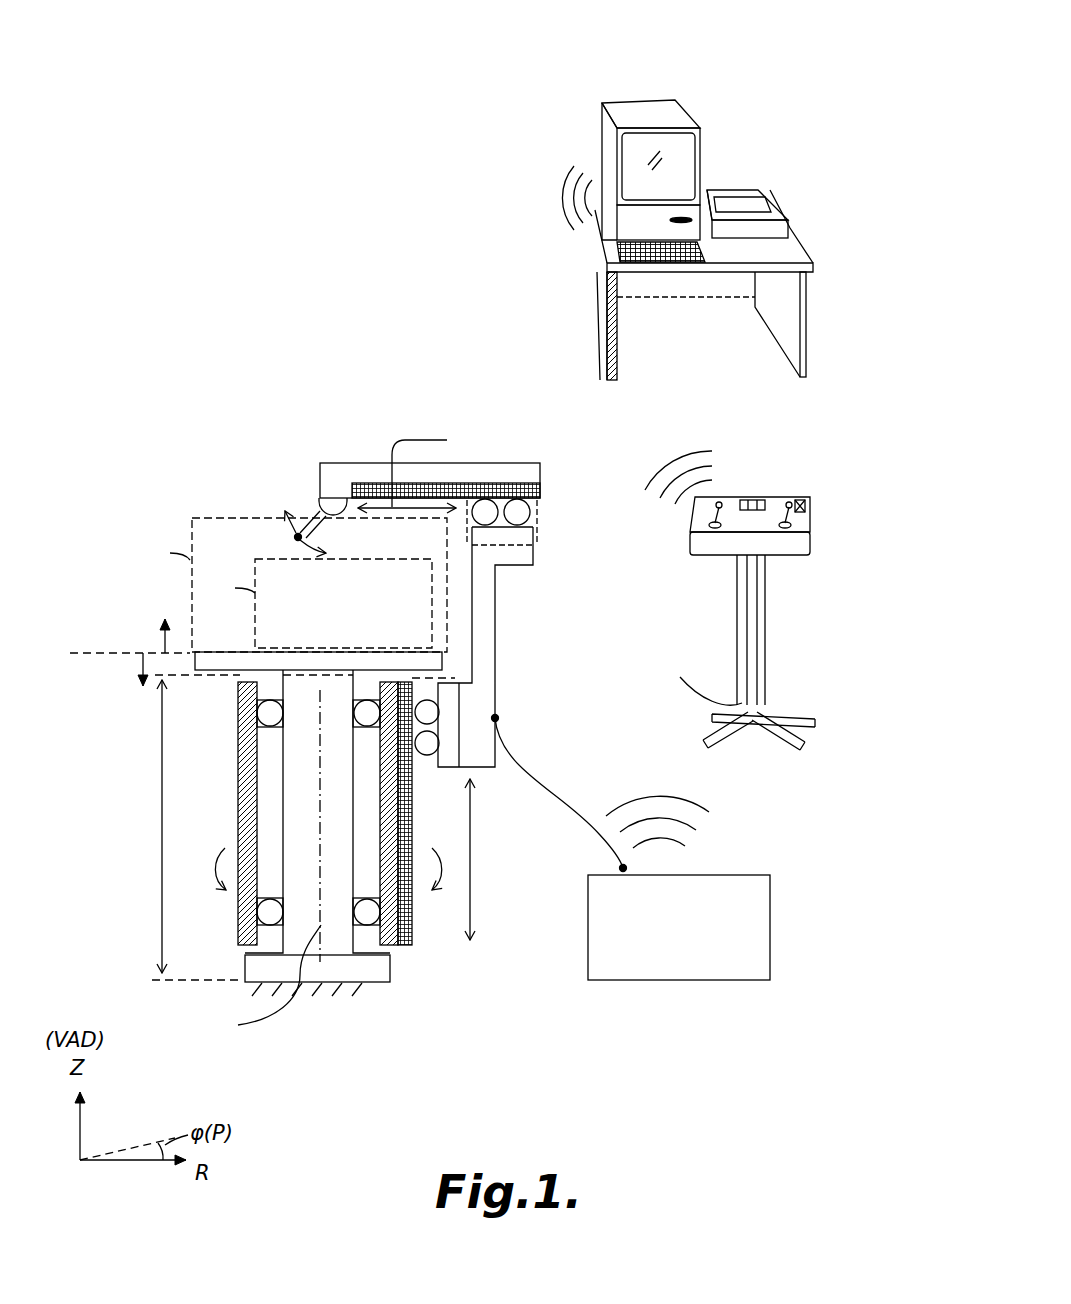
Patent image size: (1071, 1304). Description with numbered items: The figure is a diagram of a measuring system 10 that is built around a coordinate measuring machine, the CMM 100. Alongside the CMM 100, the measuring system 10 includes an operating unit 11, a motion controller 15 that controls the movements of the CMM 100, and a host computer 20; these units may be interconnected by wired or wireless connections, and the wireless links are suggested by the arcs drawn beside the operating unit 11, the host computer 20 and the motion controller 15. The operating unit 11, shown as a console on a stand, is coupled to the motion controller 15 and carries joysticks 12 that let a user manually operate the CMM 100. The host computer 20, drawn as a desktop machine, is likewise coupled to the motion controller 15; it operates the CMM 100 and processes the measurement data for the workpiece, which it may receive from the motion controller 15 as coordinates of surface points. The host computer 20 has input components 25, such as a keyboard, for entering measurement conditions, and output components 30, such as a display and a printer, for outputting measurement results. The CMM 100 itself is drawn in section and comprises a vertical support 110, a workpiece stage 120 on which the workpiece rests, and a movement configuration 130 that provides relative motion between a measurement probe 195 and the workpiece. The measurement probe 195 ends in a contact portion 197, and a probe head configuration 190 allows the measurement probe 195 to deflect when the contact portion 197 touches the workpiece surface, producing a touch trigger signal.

The CMM 100 is at (205, 133).
The measuring system 10 is at (656, 72).
The host computer 20 is at (769, 140).
The input components 25 is at (683, 250).
The output components 30 is at (682, 148).
The operating unit 11 is at (832, 525).
The joysticks 12 is at (786, 510).
The motion controller 15 is at (605, 980).
The vertical support 110 is at (305, 770).
The workpiece stage 120 is at (432, 655).
The movement configuration 130 is at (470, 1019).
The probe head configuration 190 is at (290, 476).
The measurement probe 195 is at (301, 519).
The contact portion 197 is at (294, 537).